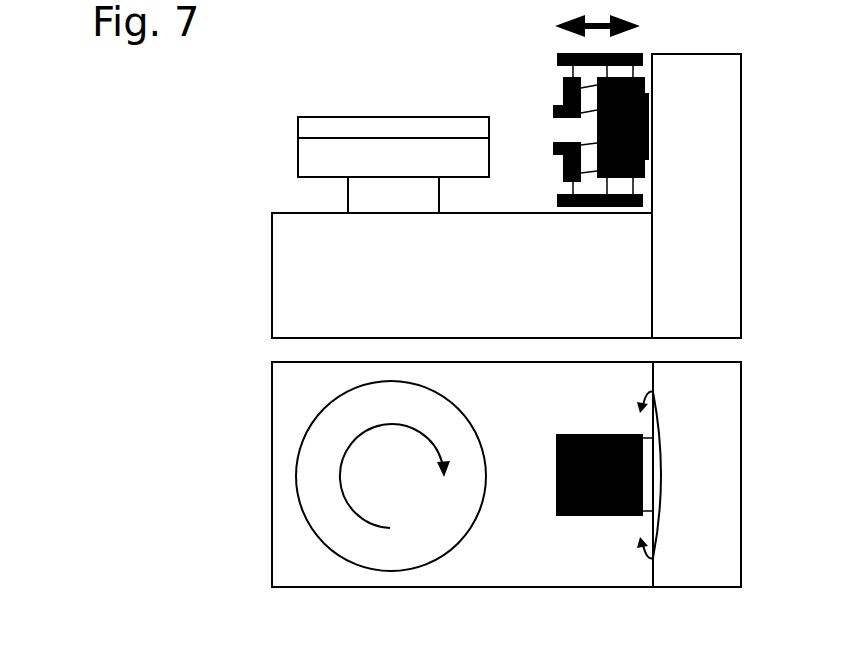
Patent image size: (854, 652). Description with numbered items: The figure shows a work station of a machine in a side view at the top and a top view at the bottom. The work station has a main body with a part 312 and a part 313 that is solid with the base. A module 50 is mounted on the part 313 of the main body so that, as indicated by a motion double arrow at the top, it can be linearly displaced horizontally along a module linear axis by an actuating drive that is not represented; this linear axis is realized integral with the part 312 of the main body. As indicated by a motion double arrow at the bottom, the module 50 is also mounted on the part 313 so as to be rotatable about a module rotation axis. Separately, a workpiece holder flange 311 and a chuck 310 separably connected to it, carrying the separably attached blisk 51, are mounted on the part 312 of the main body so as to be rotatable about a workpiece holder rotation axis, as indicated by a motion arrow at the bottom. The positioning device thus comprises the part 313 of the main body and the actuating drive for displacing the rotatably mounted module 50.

The module 50 is at (512, 78).
The blisk 51 is at (298, 124).
The chuck 310 is at (308, 150).
The workpiece holder flange 311 is at (356, 190).
The part of the main body 312 is at (370, 317).
The part of the main body 313 is at (723, 107).